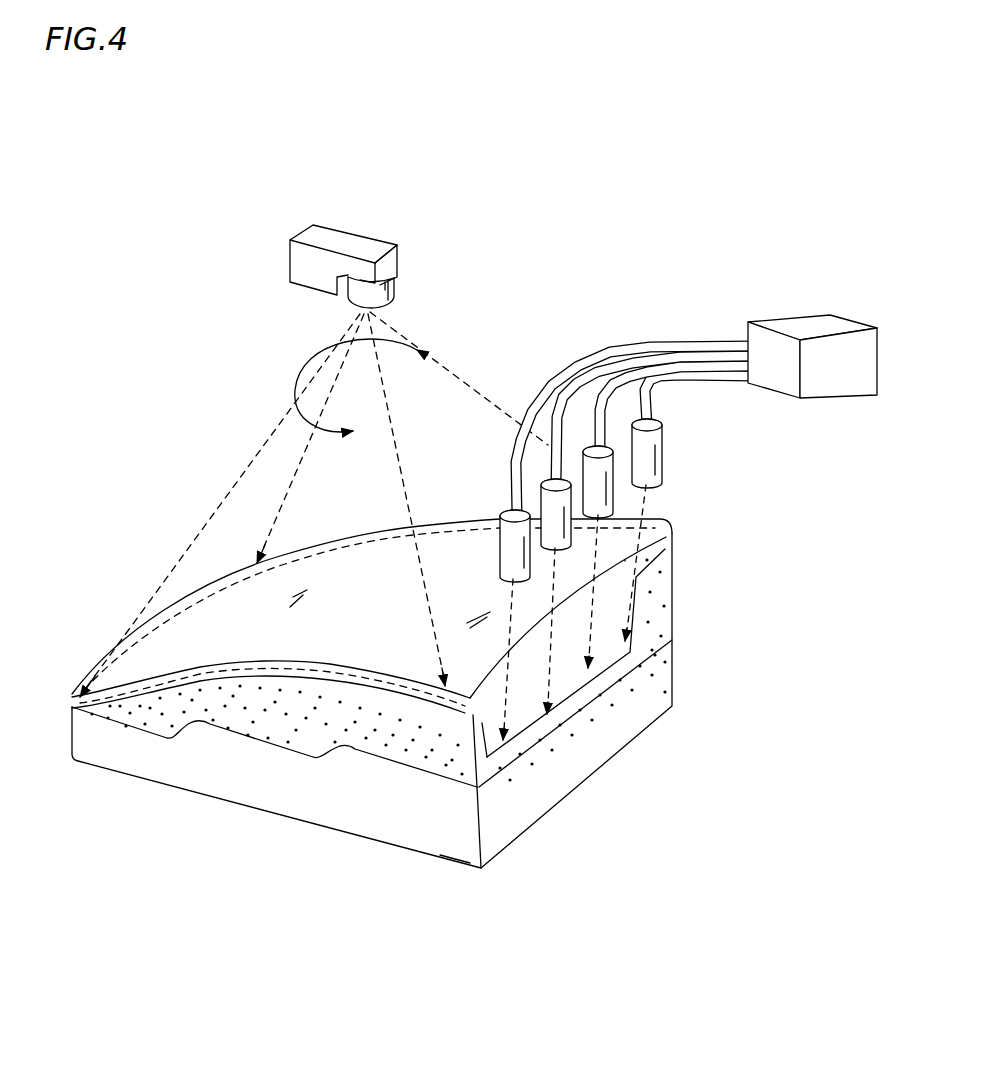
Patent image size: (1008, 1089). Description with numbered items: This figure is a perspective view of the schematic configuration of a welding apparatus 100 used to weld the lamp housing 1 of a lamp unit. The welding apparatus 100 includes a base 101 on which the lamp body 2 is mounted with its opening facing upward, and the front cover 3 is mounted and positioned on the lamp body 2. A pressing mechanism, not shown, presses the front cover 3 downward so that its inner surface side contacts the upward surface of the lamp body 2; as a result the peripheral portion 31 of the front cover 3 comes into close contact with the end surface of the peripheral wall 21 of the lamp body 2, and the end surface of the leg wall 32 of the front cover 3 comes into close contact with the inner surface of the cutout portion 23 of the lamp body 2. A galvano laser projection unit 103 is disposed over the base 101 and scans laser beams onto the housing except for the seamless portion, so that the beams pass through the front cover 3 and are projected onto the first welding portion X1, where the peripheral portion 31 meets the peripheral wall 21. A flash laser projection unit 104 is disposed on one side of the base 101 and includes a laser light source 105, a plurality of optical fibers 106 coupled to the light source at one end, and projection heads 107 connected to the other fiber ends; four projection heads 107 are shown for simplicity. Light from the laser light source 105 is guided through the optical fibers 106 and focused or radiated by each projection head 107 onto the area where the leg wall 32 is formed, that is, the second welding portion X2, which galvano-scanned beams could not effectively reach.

The welding apparatus 100 is at (556, 135).
The galvano laser projection unit 103 is at (362, 245).
The flash laser projection unit 104 is at (623, 316).
The laser light source 105 is at (814, 322).
The optical fibers 106 is at (680, 352).
The projection heads 107 is at (615, 520).
The lamp housing 1 is at (718, 555).
The lamp body 2 is at (672, 630).
The front cover 3 is at (195, 590).
The peripheral wall 21 is at (360, 738).
The cutout portion 23 is at (605, 665).
The peripheral portion 31 is at (150, 691).
The leg wall 32 is at (610, 623).
The base 101 is at (472, 845).
The first welding portion X1 is at (360, 533).
The second welding portion X2 is at (605, 665).